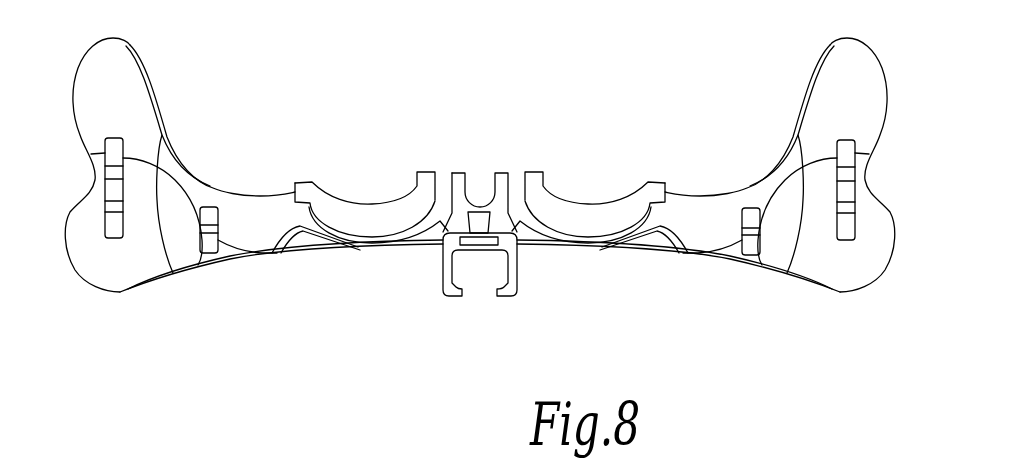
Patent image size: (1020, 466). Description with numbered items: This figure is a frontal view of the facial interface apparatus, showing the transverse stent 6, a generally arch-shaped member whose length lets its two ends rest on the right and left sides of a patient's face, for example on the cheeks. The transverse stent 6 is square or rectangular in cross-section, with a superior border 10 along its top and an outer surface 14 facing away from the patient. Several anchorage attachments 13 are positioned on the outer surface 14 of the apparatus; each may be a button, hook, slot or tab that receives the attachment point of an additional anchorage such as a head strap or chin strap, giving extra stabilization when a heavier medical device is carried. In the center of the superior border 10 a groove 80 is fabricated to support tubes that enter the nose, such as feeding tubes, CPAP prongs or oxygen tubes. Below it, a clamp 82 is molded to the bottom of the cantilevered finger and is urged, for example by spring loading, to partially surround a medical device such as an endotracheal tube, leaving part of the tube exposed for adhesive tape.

The transverse stent 6 is at (711, 243).
The superior border 10 is at (778, 157).
The anchorage attachment 13 is at (105, 178).
The outer surface 14 is at (786, 262).
The groove 80 is at (480, 193).
The clamp 82 is at (515, 277).